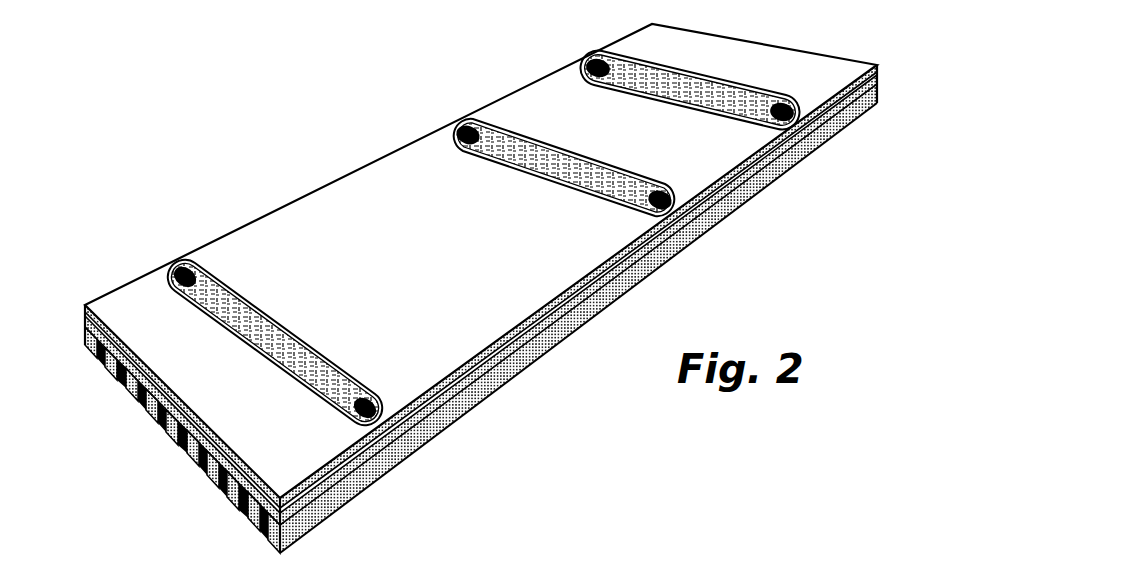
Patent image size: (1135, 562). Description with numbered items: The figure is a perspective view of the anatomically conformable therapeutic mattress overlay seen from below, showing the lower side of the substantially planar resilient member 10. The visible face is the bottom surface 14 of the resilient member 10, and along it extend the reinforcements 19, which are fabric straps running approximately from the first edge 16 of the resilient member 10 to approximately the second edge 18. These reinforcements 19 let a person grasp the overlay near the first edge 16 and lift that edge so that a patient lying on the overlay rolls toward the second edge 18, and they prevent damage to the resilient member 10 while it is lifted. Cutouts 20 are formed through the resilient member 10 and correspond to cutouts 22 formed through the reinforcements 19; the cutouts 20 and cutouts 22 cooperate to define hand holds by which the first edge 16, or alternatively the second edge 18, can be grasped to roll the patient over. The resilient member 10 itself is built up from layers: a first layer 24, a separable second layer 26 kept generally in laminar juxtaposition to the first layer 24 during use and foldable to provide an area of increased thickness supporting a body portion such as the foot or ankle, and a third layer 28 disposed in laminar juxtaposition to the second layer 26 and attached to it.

The resilient member 10 is at (113, 555).
The bottom surface 14 is at (600, 310).
The first edge 16 is at (581, 318).
The second edge 18 is at (362, 167).
The reinforcements 19 is at (242, 303).
The cutouts 20 is at (170, 268).
The cutouts 22 is at (188, 268).
The first layer 24 is at (318, 532).
The second layer 26 is at (346, 505).
The third layer 28 is at (383, 480).